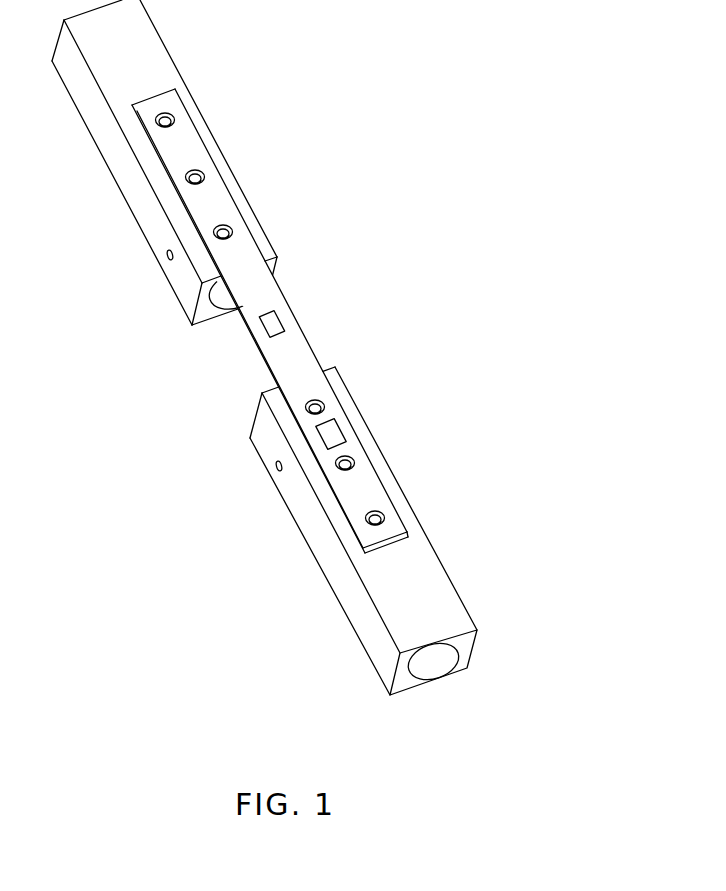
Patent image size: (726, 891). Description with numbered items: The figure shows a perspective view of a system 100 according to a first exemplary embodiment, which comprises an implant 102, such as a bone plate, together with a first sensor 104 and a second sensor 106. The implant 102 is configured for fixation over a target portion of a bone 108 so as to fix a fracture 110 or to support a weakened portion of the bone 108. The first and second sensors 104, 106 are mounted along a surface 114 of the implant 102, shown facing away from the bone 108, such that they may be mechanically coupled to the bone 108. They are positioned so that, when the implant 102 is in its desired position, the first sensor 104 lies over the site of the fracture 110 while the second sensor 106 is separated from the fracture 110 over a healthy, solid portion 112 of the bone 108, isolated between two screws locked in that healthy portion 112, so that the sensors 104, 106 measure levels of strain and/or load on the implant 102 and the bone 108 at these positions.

The system 100 is at (449, 190).
The implant 102 is at (317, 357).
The first sensor 104 is at (282, 308).
The second sensor 106 is at (342, 432).
The bone 108 is at (107, 139).
The fracture 110 is at (232, 367).
The healthy portion 112 is at (317, 545).
The surface 114 is at (240, 271).